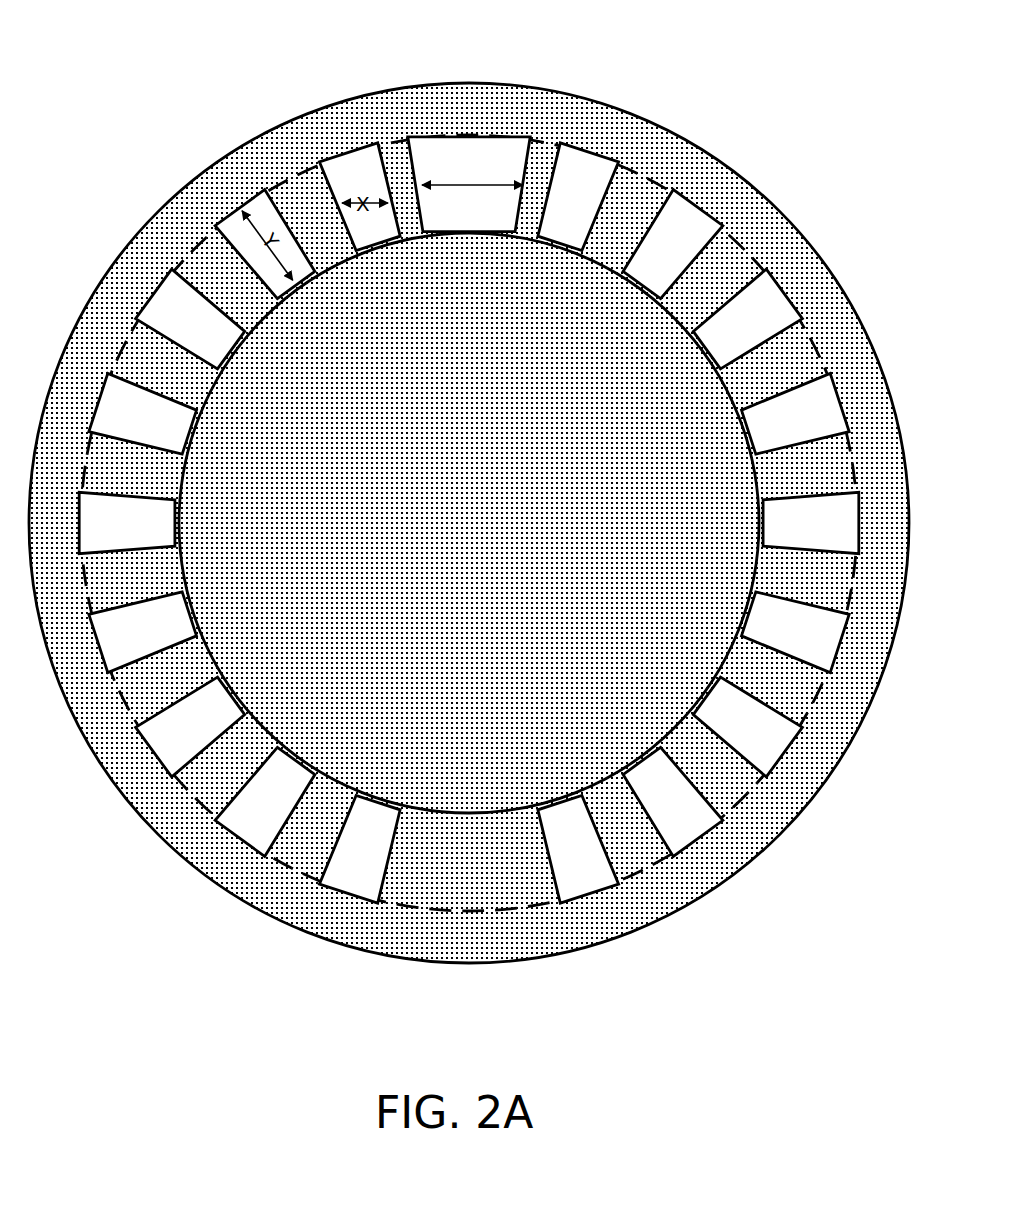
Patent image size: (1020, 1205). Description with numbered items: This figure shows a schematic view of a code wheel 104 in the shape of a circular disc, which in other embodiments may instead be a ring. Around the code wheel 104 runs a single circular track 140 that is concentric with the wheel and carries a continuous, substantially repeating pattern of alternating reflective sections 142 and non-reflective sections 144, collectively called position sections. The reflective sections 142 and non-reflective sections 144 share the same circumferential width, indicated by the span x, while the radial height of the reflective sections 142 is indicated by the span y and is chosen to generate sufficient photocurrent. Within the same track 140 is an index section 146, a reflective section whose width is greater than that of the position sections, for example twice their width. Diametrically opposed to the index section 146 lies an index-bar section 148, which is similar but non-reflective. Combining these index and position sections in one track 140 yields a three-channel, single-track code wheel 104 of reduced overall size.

The code wheel 104 is at (147, 222).
The track 140 is at (756, 243).
The reflective section 142 is at (587, 177).
The non-reflective section 144 is at (640, 196).
The index section 146 is at (457, 155).
The index-bar section 148 is at (486, 884).